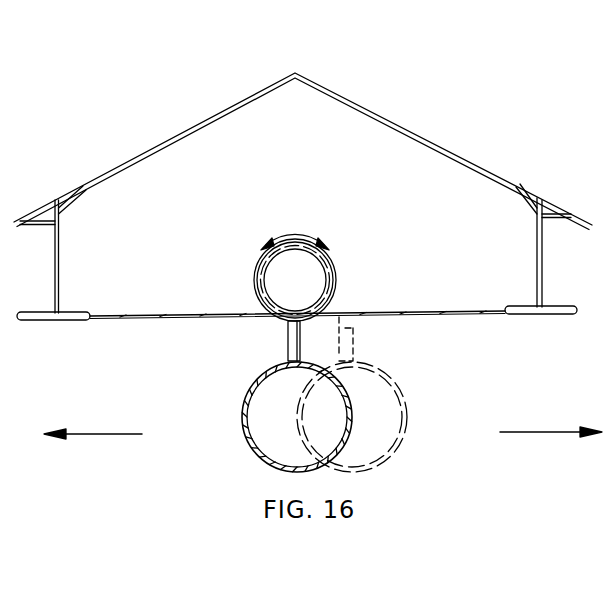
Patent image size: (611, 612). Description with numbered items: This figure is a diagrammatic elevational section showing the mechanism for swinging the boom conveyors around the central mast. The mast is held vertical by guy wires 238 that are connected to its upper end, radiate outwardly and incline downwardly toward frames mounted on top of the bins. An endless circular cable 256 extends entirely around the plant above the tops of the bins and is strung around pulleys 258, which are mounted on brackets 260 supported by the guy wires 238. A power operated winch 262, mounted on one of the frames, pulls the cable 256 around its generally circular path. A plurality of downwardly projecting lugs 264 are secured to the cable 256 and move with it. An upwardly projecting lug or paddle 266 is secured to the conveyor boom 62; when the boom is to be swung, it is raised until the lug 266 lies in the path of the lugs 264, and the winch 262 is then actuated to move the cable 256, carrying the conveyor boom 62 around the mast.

The guy wires 238 is at (272, 83).
The brackets 260 is at (59, 232).
The pulleys 258 is at (70, 312).
The endless circular cable 256 is at (414, 310).
The power operated winch 262 is at (325, 262).
The upwardly projecting lug 266 is at (300, 345).
The downwardly projecting lugs 264 is at (287, 351).
The conveyor boom 62 is at (253, 445).